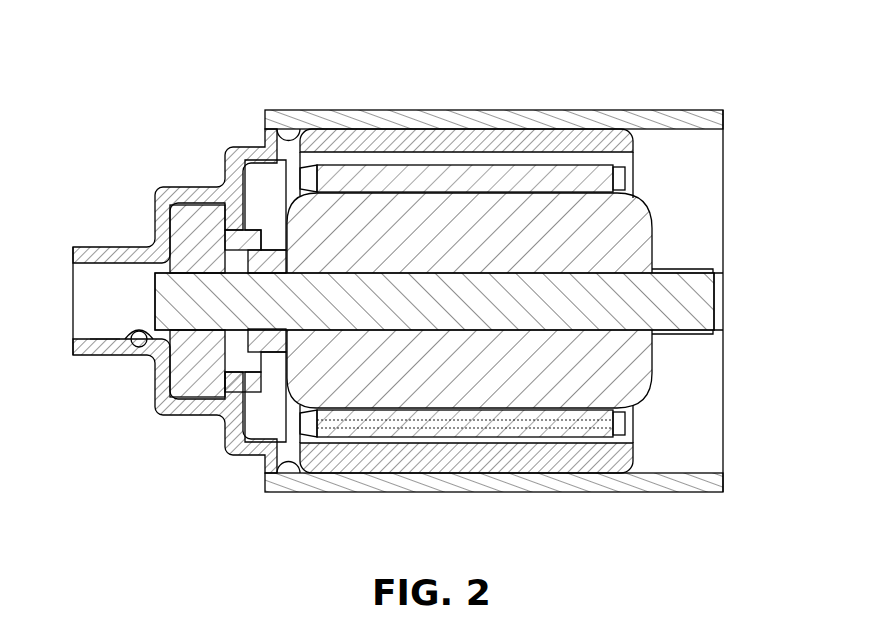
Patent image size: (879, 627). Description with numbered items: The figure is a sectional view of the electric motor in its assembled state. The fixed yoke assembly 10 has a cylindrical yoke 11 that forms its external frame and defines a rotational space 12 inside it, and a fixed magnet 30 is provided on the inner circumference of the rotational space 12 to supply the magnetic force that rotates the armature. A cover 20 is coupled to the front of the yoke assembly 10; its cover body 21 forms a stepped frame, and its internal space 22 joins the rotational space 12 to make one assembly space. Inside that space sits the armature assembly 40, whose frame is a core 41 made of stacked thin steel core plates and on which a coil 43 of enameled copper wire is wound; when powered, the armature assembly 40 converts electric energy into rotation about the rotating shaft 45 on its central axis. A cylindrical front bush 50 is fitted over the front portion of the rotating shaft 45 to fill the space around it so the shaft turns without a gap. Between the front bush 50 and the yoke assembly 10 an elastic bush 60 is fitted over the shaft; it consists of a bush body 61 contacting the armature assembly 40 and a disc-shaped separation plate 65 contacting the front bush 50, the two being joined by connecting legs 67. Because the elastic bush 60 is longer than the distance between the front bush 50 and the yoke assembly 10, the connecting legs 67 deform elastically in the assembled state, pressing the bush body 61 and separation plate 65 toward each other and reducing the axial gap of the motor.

The yoke assembly 10 is at (499, 253).
The yoke 11 is at (604, 110).
The rotational space 12 is at (700, 419).
The cover 20 is at (80, 364).
The cover body 21 is at (110, 358).
The internal space 22 is at (263, 176).
The fixed magnet 30 is at (509, 126).
The armature assembly 40 is at (450, 162).
The core 41 is at (610, 175).
The coil 43 is at (640, 233).
The shaft 45 is at (705, 300).
The front bush 50 is at (170, 404).
The elastic bush 60 is at (156, 314).
The bush body 61 is at (218, 342).
The separation plate 65 is at (218, 415).
The connecting leg 67 is at (216, 185).